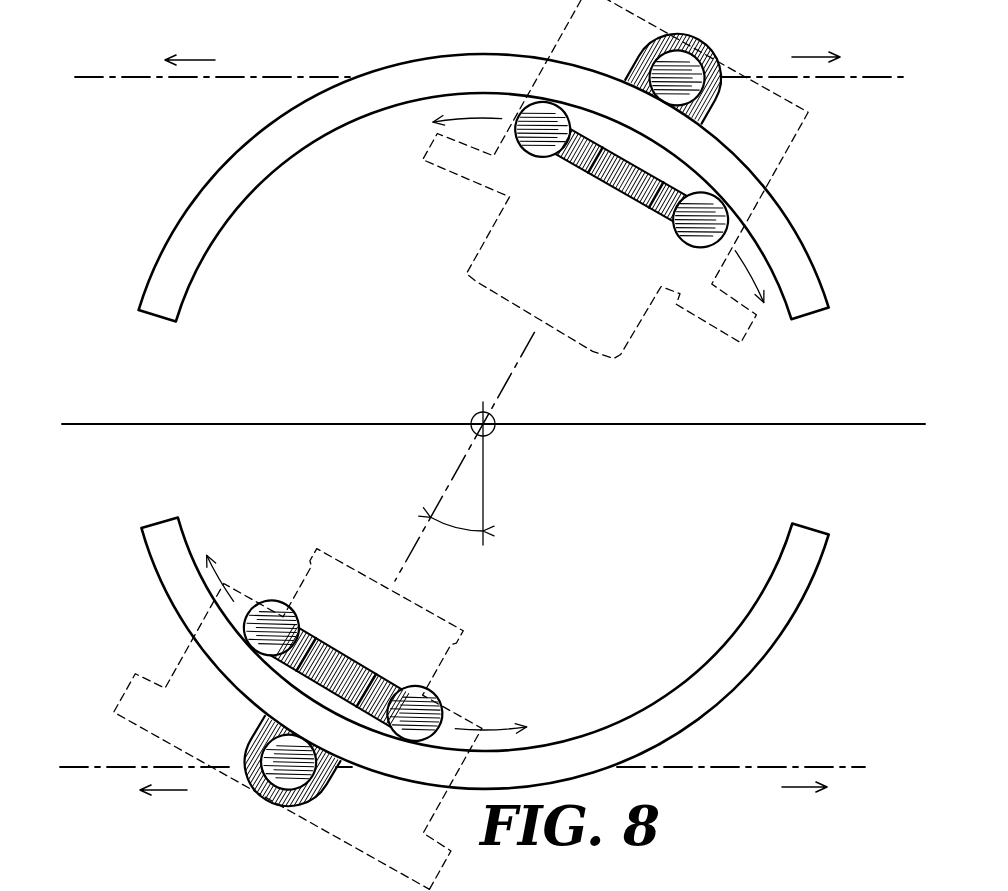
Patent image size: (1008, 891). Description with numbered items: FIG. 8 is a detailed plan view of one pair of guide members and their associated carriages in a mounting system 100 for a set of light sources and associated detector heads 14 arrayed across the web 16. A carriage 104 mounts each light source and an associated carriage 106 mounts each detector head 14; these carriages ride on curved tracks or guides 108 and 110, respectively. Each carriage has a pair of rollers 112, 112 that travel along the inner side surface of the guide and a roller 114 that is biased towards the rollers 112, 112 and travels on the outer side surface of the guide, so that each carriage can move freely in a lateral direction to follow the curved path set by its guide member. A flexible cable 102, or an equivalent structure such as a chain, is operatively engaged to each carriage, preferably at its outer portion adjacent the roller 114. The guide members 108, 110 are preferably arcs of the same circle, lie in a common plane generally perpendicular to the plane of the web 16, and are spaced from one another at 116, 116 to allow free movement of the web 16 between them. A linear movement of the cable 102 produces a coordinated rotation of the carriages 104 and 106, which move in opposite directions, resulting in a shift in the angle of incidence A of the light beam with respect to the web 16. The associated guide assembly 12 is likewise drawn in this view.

The mounting system 100 is at (256, 32).
The flexible cable 102 is at (234, 77).
The lower roller guide assembly 12 is at (178, 657).
The detector head 14 is at (556, 36).
The web 16 is at (291, 423).
The carriage 104 is at (355, 640).
The carriage 106 is at (603, 192).
The curved track or guide 108 is at (692, 672).
The curved track or guide 110 is at (808, 252).
The roller 112 is at (537, 160).
The roller 114 is at (650, 54).
The spacing between guide members 116 is at (125, 372).
The angle of incidence A is at (465, 531).